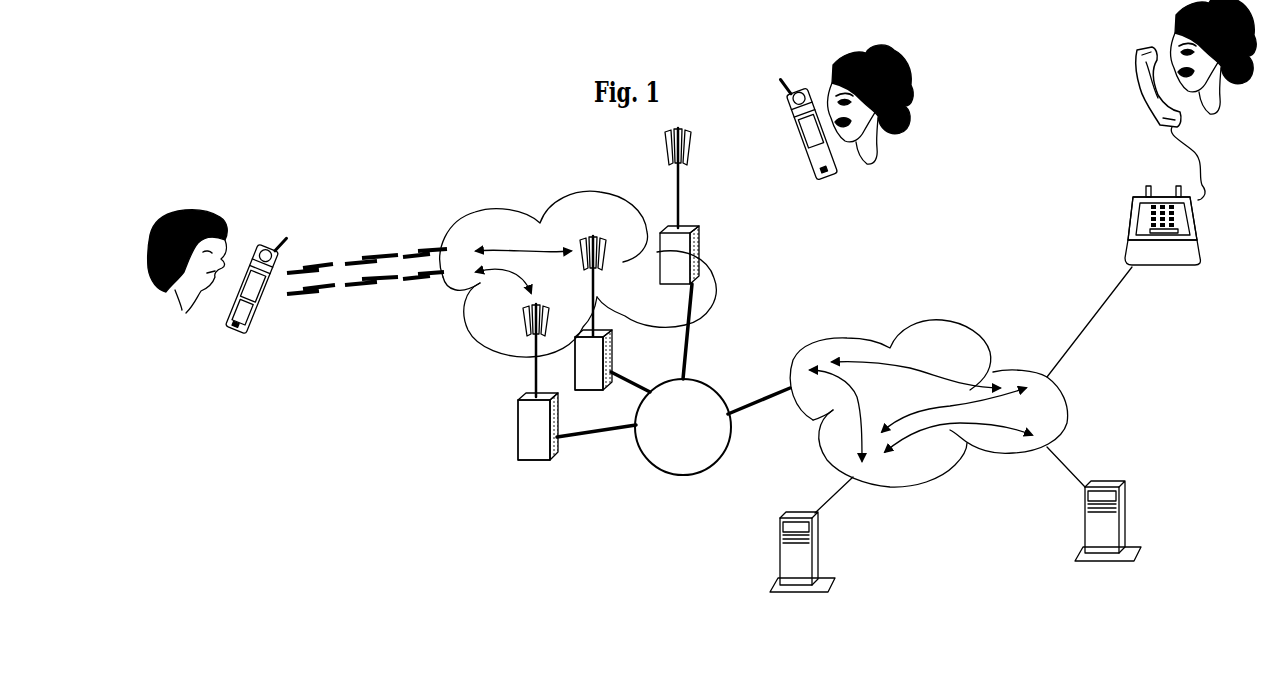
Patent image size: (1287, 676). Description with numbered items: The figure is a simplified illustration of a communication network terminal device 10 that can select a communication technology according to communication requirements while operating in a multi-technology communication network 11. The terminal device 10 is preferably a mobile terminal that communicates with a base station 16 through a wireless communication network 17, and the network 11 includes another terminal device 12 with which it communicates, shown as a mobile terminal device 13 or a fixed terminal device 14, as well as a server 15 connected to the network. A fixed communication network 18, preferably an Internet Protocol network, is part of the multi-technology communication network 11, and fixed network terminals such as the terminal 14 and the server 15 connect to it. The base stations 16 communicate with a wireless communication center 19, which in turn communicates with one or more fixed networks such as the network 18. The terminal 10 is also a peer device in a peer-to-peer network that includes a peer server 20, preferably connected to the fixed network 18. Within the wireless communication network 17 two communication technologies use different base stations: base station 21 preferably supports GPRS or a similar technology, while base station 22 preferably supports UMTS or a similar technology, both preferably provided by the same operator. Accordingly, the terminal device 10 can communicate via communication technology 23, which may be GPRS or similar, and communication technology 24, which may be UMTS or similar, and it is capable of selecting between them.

The terminal device 10 is at (258, 240).
The multi-technology communication network 11 is at (841, 211).
The another terminal device 12 is at (991, 100).
The mobile terminal device 13 is at (798, 160).
The fixed terminal device 14 is at (1128, 212).
The server 15 is at (1126, 504).
The base station 16 is at (701, 246).
The wireless communication network 17 is at (511, 214).
The fixed communication network 18 is at (818, 428).
The wireless communication center 19 is at (666, 476).
The peer server 20 is at (820, 536).
The base station 21 is at (516, 447).
The base station 22 is at (601, 392).
The communication technology 23 is at (383, 256).
The communication technology 24 is at (378, 287).